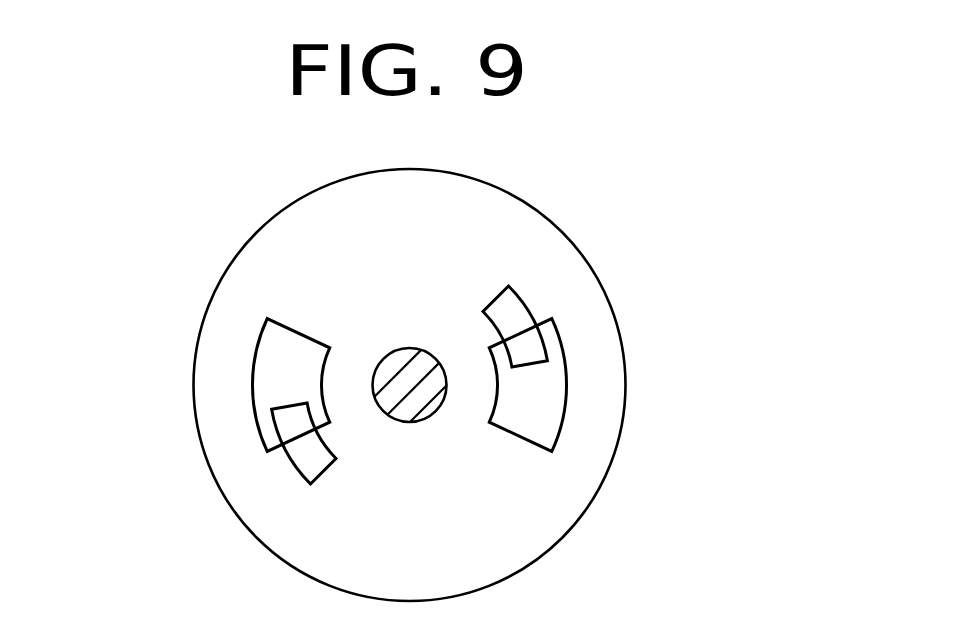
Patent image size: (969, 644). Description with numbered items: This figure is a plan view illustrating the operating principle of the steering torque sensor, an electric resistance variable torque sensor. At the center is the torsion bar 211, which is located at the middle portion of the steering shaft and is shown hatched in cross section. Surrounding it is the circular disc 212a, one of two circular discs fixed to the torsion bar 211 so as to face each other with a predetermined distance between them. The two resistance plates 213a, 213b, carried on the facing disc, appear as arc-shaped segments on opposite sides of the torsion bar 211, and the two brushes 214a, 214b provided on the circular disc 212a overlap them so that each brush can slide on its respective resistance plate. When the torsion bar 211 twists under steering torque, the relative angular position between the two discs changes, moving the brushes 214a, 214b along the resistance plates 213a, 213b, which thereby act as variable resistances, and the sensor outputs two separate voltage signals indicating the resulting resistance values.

The torsion bar 211 is at (410, 422).
The circular disc 212a is at (625, 385).
The resistance plate 213a is at (252, 379).
The resistance plate 213b is at (562, 422).
The brush 214a is at (288, 467).
The brush 214b is at (522, 296).